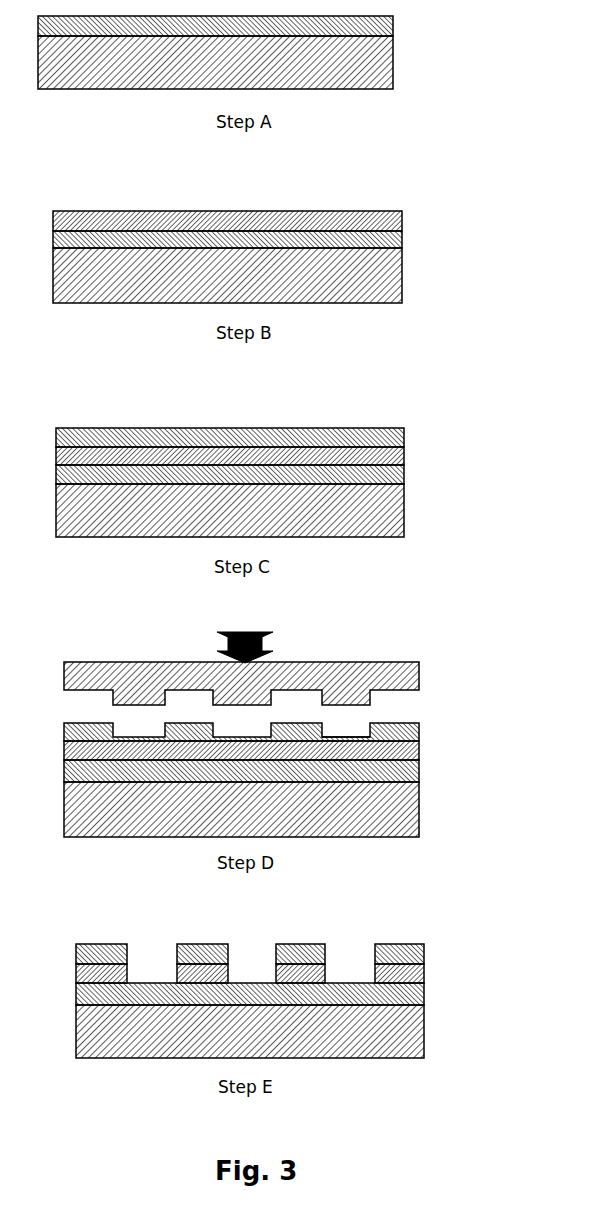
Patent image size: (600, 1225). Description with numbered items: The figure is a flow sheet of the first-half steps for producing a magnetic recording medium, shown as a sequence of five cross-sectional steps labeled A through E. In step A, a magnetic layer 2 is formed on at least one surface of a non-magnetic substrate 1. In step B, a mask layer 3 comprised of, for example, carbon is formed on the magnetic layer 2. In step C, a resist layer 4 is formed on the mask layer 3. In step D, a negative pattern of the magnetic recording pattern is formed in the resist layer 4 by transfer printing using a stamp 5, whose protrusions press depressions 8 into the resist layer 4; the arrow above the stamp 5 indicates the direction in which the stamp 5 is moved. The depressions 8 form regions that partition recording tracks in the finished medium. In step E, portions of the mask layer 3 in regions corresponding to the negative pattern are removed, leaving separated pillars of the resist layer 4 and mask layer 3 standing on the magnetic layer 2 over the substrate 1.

The non-magnetic substrate 1 is at (393, 67).
The magnetic layer 2 is at (393, 25).
The carbon mask layer 3 is at (402, 222).
The resist layer 4 is at (404, 437).
The stamp 5 is at (419, 681).
The depression in resist layer 8 is at (347, 737).